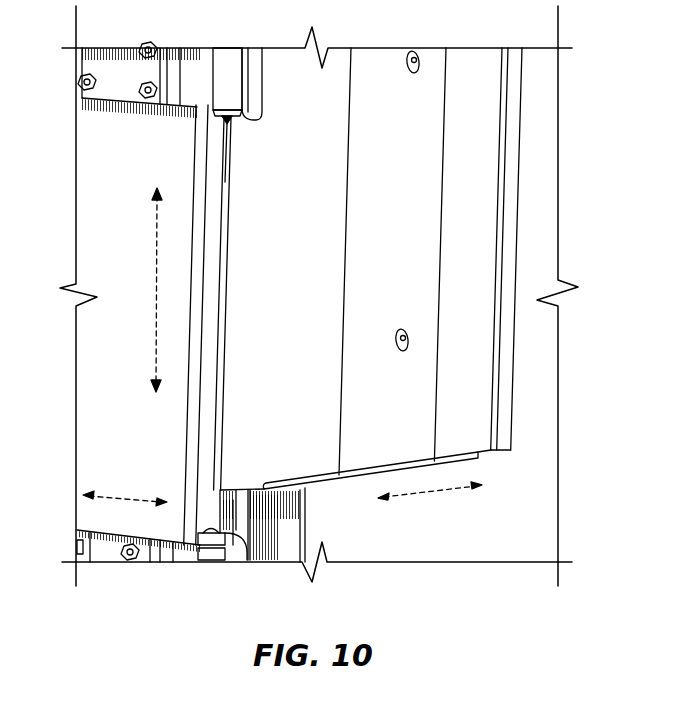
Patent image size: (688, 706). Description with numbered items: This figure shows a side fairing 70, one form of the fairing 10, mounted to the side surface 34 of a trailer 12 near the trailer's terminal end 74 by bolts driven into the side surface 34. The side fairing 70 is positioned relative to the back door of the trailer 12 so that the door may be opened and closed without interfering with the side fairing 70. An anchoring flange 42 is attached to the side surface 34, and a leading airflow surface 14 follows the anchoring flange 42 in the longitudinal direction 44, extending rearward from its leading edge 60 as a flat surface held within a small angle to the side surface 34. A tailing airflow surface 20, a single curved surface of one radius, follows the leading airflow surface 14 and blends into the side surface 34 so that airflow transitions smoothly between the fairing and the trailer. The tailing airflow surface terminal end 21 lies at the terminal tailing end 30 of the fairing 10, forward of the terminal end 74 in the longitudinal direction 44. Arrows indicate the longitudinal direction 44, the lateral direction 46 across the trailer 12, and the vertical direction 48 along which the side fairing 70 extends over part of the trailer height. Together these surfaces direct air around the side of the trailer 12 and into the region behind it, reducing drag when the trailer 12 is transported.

The fairing 10 is at (511, 248).
The trailer 12 is at (517, 496).
The leading airflow surface 14 is at (476, 193).
The tailing airflow surface 20 is at (305, 458).
The tailing airflow surface terminal end 21 is at (225, 182).
The terminal tailing end 30 is at (193, 304).
The side surface 34 is at (533, 343).
The anchoring flange 42 is at (503, 434).
The longitudinal direction 44 is at (430, 492).
The lateral direction 46 is at (125, 500).
The vertical direction 48 is at (157, 290).
The leading edge 60 is at (522, 98).
The side fairing 70 is at (344, 296).
The terminal end 74 is at (105, 414).